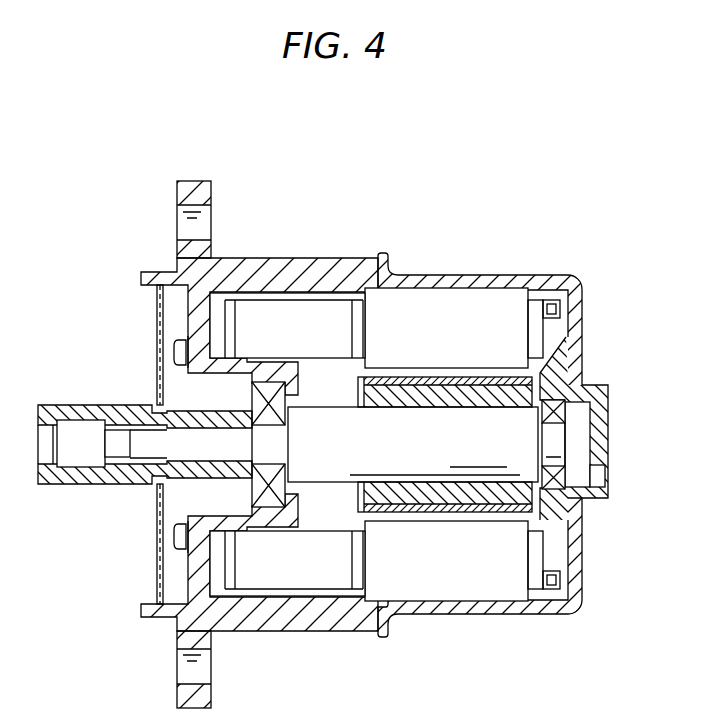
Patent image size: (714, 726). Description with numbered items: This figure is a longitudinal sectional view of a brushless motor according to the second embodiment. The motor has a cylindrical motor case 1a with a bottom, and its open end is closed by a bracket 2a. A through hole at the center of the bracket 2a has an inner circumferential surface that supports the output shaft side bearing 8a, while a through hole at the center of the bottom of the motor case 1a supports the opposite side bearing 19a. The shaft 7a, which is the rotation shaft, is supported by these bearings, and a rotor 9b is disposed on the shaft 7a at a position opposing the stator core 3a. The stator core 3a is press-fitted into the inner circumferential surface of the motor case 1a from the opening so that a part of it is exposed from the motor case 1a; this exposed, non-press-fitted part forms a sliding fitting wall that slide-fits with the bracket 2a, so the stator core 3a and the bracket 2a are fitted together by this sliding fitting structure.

The motor case 1a is at (487, 275).
The bracket 2a is at (271, 262).
The stator core 3a is at (425, 308).
The shaft 7a is at (148, 447).
The output shaft side bearing 8a is at (252, 397).
The rotor 9b is at (472, 495).
The opposite side bearing 19a is at (556, 394).